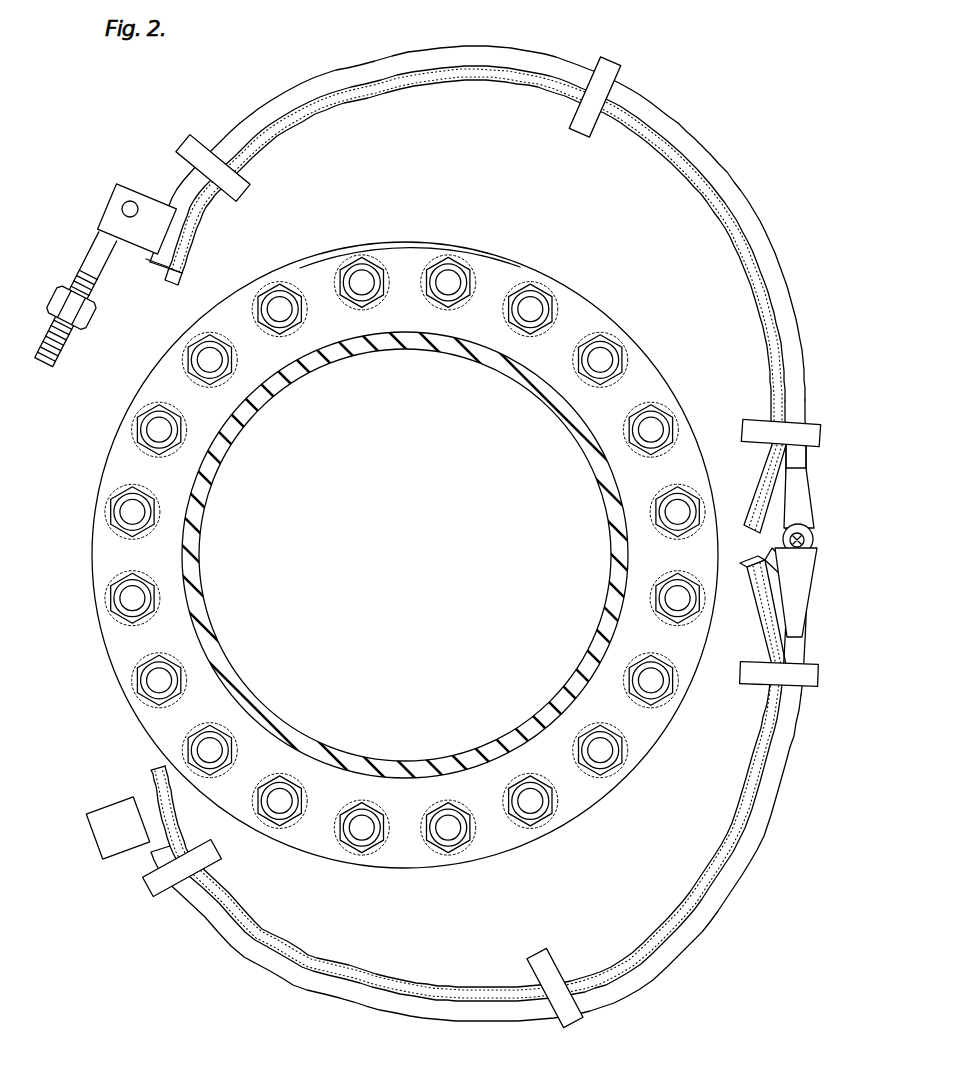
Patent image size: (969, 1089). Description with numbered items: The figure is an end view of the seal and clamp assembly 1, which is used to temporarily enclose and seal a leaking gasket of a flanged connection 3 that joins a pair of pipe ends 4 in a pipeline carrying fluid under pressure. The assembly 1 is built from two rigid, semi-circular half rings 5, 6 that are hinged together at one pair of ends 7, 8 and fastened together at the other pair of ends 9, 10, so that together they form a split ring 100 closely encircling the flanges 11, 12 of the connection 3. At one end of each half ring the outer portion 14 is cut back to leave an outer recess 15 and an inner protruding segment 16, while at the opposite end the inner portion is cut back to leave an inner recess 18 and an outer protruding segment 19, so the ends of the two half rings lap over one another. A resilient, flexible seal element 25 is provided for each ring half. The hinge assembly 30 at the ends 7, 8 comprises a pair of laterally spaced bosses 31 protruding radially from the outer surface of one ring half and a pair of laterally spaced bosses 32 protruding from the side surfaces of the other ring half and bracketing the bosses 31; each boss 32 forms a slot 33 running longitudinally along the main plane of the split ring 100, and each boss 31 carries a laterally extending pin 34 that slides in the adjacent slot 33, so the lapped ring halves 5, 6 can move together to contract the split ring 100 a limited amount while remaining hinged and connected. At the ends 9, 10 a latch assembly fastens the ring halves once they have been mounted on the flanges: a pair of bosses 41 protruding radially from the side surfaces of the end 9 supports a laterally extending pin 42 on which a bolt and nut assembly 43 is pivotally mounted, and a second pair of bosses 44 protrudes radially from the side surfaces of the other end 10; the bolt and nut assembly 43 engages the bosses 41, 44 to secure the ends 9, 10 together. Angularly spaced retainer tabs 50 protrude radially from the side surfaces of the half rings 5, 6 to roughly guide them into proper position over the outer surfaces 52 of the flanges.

The seal and clamp assembly 1 is at (442, 518).
The flanged connection 3 is at (484, 534).
The pipe ends 4 is at (240, 676).
The half ring 5 is at (376, 57).
The half ring 6 is at (645, 957).
The half ring end 7 is at (772, 658).
The half ring end 8 is at (793, 475).
The half ring end 9 is at (178, 187).
The half ring end 10 is at (150, 855).
The flange 11 is at (405, 555).
The flange 12 is at (590, 798).
The outer portion 14 is at (808, 403).
The outer recess 15 is at (770, 548).
The inner protruding segment 16 is at (745, 523).
The inner recess 18 is at (150, 268).
The outer protruding segment 19 is at (142, 263).
The seal element 25 is at (313, 105).
The hinge assembly 30 is at (818, 566).
The bosses 31 is at (800, 503).
The bosses 32 is at (795, 606).
The slot 33 is at (812, 532).
The pin 34 is at (803, 544).
The bosses 41 is at (106, 195).
The pin 42 is at (122, 210).
The bolt and nut assembly 43 is at (88, 280).
The bosses 44 is at (120, 815).
The retainer tabs 50 is at (752, 422).
The outer surfaces of the flanges 52 is at (505, 244).
The split ring 100 is at (442, 528).